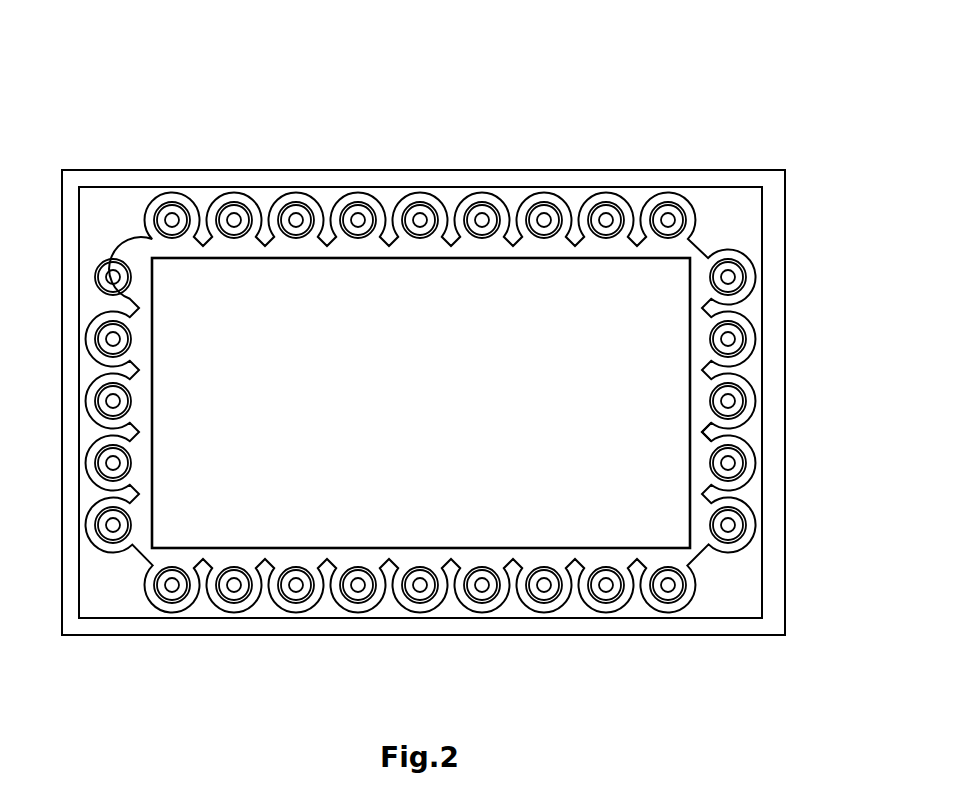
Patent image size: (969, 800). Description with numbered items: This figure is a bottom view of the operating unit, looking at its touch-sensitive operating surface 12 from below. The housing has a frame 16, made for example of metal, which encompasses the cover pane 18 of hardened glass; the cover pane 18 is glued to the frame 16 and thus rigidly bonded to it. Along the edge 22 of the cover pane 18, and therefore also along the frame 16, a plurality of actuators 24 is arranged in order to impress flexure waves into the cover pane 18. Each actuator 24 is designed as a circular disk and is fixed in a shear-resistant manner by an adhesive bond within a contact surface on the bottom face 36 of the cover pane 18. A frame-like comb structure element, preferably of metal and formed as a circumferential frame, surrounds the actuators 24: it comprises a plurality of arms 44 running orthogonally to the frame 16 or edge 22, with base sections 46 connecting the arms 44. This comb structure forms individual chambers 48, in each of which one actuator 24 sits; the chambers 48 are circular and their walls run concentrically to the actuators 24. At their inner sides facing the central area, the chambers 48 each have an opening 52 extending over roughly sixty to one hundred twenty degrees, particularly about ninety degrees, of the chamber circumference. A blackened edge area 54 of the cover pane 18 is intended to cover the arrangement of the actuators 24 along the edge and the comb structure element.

The touch-sensitive operating surface 12 is at (465, 374).
The frame 16 is at (773, 230).
The cover pane 18 is at (602, 292).
The edge 22 is at (513, 198).
The actuators 24 is at (178, 182).
The bottom face 36 is at (273, 363).
The arms 44 is at (713, 432).
The base sections 46 is at (758, 338).
The chambers 48 is at (748, 398).
The opening 52 is at (668, 452).
The blackened edge area 54 is at (545, 548).